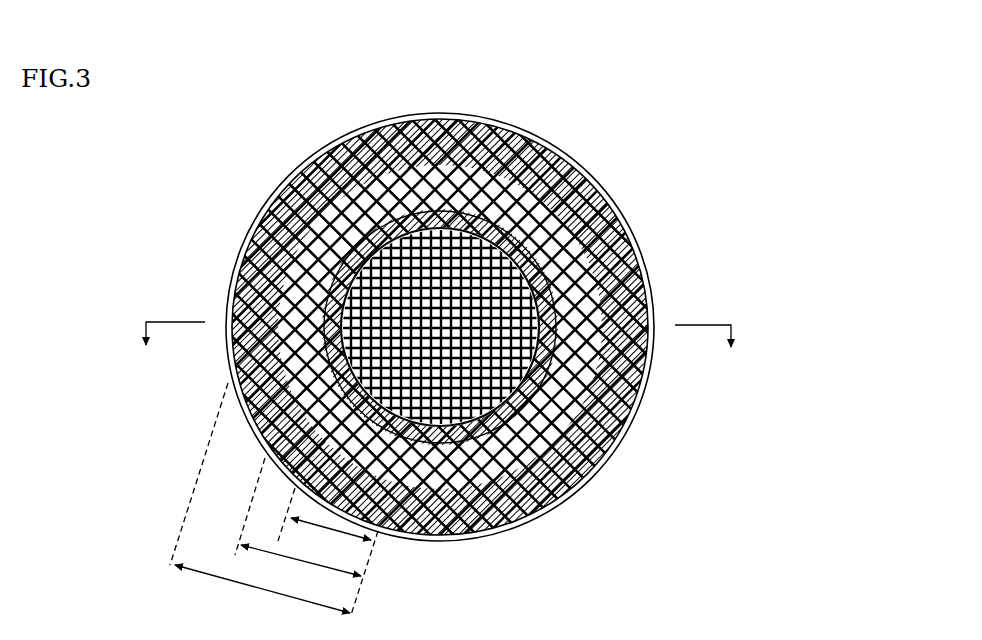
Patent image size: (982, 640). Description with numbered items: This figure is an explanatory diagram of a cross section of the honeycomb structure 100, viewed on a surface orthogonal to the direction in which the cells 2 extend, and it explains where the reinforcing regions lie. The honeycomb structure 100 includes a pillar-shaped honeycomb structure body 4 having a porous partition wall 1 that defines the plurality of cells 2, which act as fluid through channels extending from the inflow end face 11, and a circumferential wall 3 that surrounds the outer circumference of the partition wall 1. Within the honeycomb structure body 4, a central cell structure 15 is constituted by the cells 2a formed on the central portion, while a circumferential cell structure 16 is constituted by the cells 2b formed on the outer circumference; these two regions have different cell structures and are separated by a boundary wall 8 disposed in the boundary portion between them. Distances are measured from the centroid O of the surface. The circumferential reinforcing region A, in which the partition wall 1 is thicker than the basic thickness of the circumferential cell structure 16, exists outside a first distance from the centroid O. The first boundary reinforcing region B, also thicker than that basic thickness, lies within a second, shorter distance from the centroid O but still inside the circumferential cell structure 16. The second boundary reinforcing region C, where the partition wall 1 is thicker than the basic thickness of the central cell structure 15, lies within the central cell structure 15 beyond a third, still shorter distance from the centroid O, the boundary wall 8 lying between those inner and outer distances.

The honeycomb structure 100 is at (752, 26).
The porous partition wall 1 is at (457, 153).
The cells 2 is at (440, 327).
The cells of the central cell structure 2a is at (512, 222).
The cells of the circumferential cell structure 2b is at (381, 150).
The circumferential wall 3 is at (618, 213).
The honeycomb structure body 4 is at (646, 381).
The boundary wall 8 is at (545, 308).
The inflow end face 11 is at (276, 159).
The central cell structure 15 is at (394, 251).
The circumferential cell structure 16 is at (448, 484).
The centroid O is at (432, 319).
The circumferential reinforcing region A is at (508, 400).
The first boundary reinforcing region B is at (490, 403).
The second boundary reinforcing region C is at (447, 415).